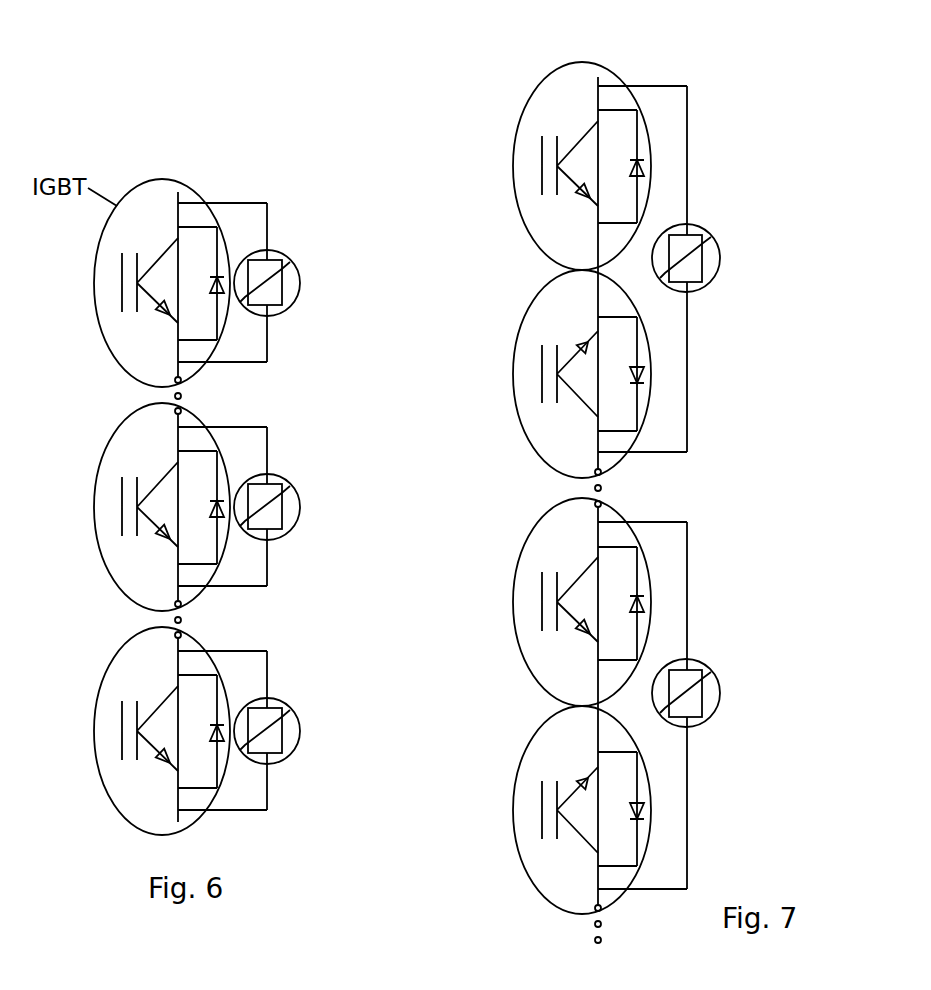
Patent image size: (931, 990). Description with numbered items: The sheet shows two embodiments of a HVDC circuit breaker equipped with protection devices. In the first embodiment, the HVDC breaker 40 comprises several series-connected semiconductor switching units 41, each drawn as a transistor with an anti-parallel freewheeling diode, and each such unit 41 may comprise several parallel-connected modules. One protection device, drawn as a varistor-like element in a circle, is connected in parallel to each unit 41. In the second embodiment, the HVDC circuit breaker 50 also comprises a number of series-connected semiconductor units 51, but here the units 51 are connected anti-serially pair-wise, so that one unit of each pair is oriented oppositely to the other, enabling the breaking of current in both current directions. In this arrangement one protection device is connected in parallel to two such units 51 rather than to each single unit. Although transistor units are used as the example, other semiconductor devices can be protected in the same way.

In FIG. 6, the HVDC breaker 40 is at (277, 170).
In FIG. 6, the IGBT unit 41 is at (229, 507).
In FIG. 7, the HVDC circuit breaker 50 is at (717, 57).
In FIG. 7, the IGBT unit 51 is at (647, 502).